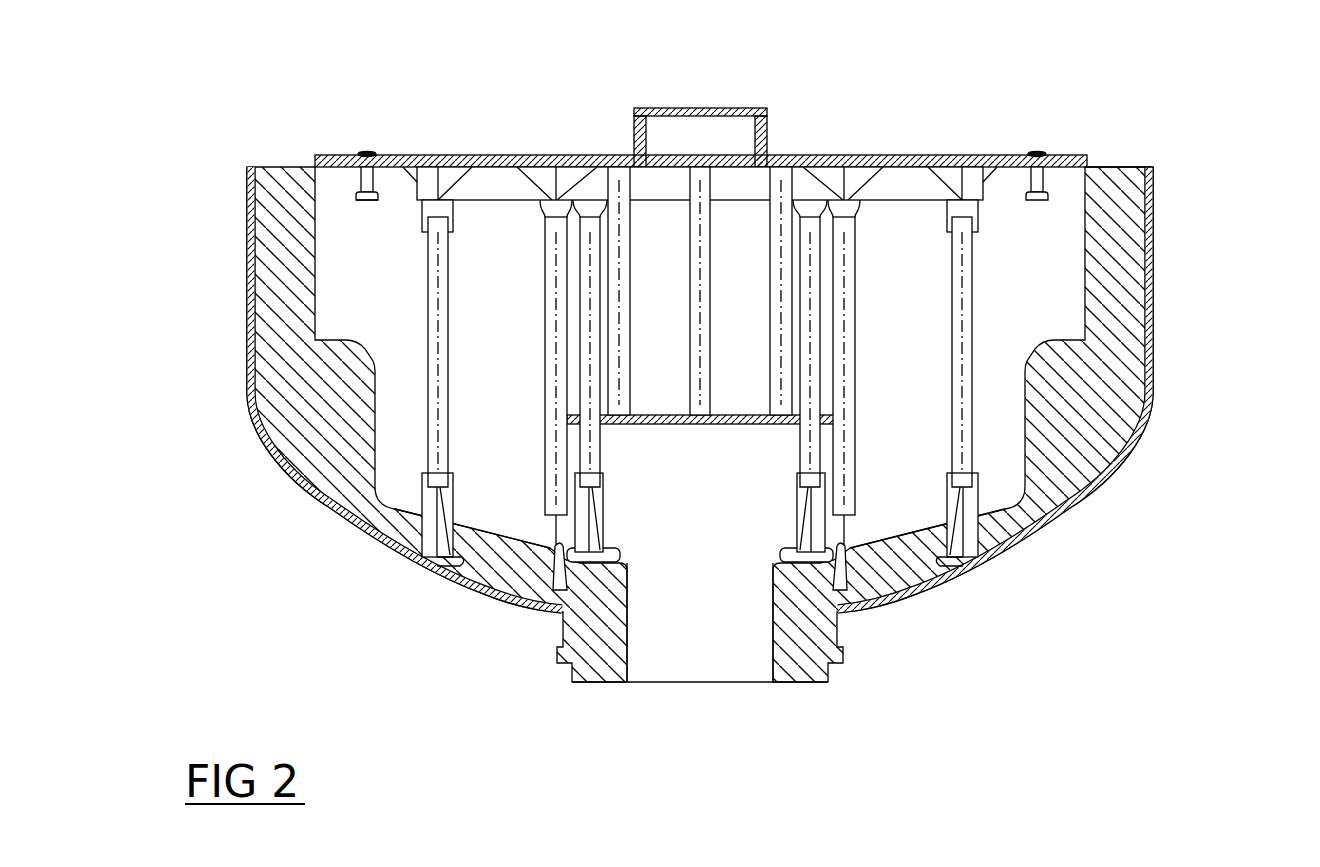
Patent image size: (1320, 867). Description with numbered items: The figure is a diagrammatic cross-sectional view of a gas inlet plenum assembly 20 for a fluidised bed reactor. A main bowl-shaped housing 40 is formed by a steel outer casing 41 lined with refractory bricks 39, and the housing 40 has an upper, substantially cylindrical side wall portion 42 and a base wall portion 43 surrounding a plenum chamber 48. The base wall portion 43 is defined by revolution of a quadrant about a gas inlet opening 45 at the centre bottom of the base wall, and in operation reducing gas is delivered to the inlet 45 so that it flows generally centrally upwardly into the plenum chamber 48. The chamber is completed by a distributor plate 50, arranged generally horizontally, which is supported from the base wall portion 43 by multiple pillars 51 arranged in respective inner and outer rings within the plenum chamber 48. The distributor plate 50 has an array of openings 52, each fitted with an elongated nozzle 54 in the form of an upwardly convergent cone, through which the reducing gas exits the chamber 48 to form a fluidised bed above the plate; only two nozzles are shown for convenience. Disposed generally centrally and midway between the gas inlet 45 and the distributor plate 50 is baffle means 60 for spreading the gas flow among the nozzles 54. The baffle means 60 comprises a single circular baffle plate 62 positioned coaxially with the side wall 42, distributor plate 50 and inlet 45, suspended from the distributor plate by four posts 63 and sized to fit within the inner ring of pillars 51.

The gas inlet plenum assembly 20 is at (739, 399).
The refractory bricks 39 is at (300, 412).
The main bowl-shaped housing 40 is at (1097, 503).
The steel outer casing 41 is at (1148, 427).
The upper substantially cylindrical side wall portion 42 is at (1155, 197).
The base wall portion 43 is at (920, 588).
The gas inlet opening 45 is at (728, 642).
The plenum chamber 48 is at (915, 379).
The distributor plate 50 is at (919, 148).
The pillars 51 is at (545, 326).
The openings 52 is at (370, 157).
The nozzle 54 is at (360, 187).
The baffle means 60 is at (701, 359).
The baffle plate 62 is at (683, 428).
The posts 63 is at (700, 298).